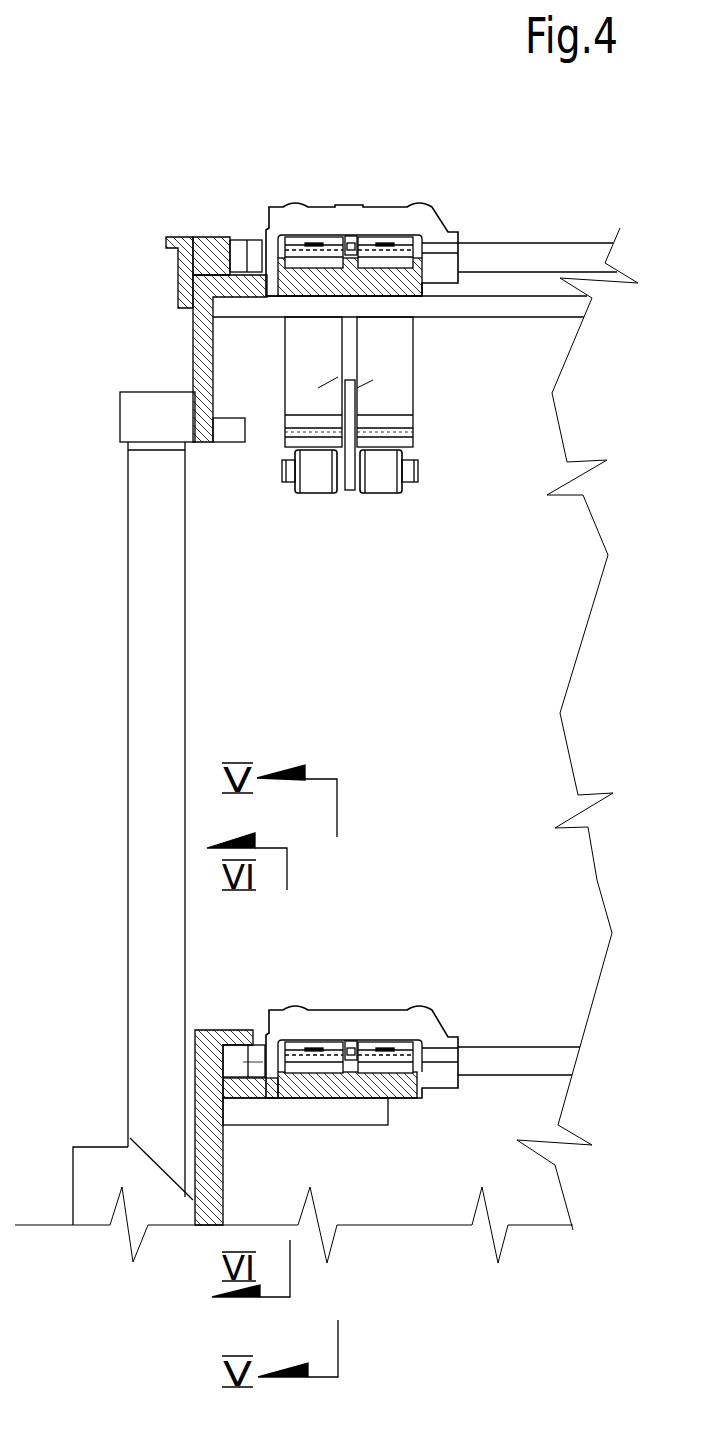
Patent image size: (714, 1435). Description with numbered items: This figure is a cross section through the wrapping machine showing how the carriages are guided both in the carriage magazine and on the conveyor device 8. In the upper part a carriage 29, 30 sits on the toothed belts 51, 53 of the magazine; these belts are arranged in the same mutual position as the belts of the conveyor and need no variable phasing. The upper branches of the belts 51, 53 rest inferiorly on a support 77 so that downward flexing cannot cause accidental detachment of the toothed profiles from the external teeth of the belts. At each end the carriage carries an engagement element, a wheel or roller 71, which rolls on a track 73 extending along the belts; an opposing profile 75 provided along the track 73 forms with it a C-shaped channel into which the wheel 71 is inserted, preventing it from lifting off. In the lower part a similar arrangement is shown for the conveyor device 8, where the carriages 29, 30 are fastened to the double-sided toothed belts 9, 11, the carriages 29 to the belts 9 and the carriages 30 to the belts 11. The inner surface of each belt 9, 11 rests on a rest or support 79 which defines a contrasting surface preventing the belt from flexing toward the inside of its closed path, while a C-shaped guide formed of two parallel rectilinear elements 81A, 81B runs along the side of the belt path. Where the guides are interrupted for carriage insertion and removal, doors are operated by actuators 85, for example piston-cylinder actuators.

The conveyor device 8 is at (525, 977).
The toothed belt 9 is at (423, 1037).
The toothed belt 11 is at (314, 1016).
The carriage 29 is at (441, 257).
The carriage 30 is at (377, 1028).
The toothed belt of the magazine 51 is at (408, 423).
The toothed belt of the magazine 53 is at (302, 400).
The wheel or roller 71 is at (255, 247).
The track 73 is at (245, 285).
The opposing profile 75 is at (210, 247).
The support 77 is at (378, 278).
The rest or support 79 is at (412, 1098).
The rectilinear element 81A is at (230, 1040).
The rectilinear element 81B is at (250, 1085).
The actuator 85 is at (110, 1022).